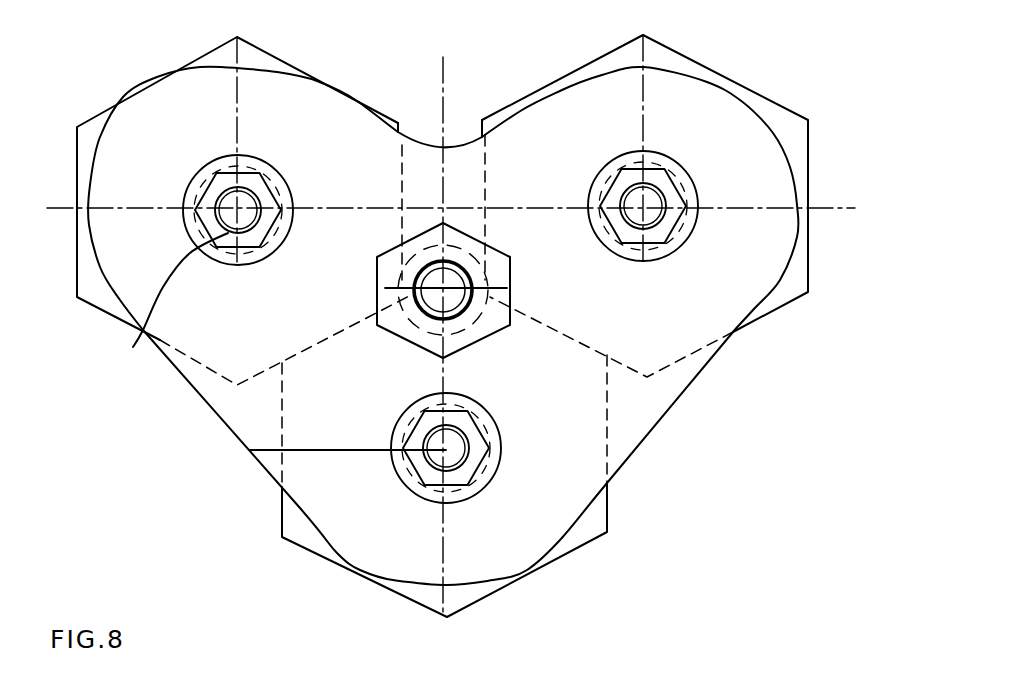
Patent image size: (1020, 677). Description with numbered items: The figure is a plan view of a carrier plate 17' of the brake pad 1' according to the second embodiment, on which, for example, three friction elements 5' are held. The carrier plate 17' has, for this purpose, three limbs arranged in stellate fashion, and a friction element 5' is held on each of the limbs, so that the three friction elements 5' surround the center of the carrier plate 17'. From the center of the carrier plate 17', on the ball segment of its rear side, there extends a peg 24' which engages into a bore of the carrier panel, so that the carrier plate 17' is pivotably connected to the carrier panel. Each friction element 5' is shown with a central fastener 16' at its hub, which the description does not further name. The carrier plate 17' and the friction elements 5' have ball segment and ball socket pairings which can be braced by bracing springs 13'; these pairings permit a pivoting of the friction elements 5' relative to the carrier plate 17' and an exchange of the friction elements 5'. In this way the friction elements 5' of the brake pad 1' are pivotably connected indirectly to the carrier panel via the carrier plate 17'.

The brake pad 1' is at (452, 320).
The friction element 5' is at (452, 326).
The bracing spring 13' is at (417, 352).
The screw 16' is at (440, 263).
The carrier plate 17' is at (468, 191).
The peg 24' is at (443, 202).